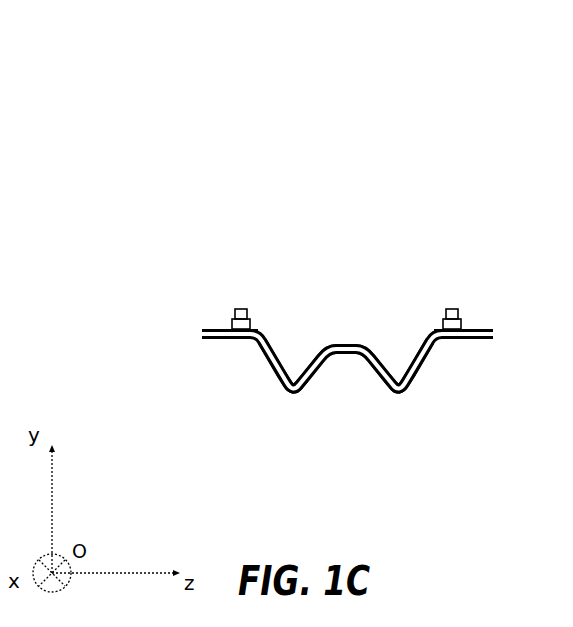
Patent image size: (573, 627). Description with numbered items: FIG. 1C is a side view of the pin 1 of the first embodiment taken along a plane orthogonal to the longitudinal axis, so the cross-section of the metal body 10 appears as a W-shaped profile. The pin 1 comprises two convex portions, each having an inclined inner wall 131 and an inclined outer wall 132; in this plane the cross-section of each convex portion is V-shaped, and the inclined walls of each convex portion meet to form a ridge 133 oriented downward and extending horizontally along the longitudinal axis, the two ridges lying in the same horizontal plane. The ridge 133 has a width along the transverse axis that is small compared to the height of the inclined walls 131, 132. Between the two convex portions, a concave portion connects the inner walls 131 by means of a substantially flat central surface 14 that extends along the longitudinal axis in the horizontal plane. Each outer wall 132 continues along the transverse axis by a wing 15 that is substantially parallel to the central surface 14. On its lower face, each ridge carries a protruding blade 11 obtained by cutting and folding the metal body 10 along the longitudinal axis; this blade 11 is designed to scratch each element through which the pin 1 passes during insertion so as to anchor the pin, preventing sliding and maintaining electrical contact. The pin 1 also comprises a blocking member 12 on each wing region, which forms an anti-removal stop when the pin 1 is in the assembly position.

The pin 1 is at (180, 253).
The metal body 10 is at (193, 333).
The protruding blade 11 is at (399, 409).
The blocking member 12 is at (451, 303).
The central surface 14 is at (345, 362).
The wing 15 is at (477, 347).
The inclined inner wall 131 is at (378, 354).
The inclined outer wall 132 is at (415, 347).
The ridge 133 is at (396, 376).